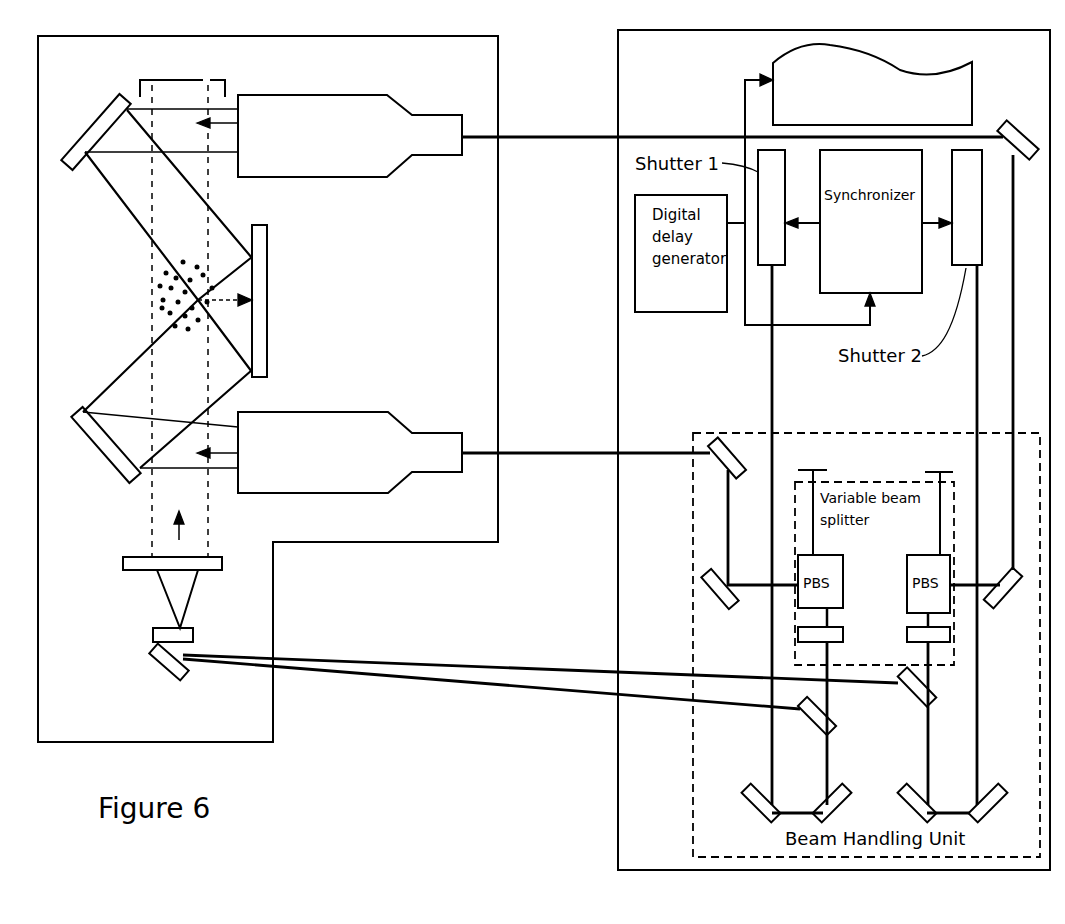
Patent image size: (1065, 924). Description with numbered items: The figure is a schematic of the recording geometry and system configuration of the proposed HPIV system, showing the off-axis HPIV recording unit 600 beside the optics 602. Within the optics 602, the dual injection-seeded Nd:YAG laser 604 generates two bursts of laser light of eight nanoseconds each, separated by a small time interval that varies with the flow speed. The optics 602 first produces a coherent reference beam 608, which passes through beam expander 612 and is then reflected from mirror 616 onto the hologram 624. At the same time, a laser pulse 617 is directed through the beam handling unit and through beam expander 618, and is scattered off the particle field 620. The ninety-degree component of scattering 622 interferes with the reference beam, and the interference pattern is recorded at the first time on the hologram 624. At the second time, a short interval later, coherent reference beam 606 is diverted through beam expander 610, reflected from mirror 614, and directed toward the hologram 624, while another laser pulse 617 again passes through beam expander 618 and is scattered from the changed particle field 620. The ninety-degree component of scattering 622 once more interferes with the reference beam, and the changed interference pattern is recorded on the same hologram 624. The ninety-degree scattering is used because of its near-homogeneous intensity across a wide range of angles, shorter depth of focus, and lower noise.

The off-axis HPIV recording unit 600 is at (268, 389).
The optics 602 is at (834, 450).
The dual injection-seeded Nd:YAG laser 604 is at (872, 84).
The coherent reference beam 606 is at (732, 141).
The coherent reference beam 608 is at (586, 458).
The beam expander 610 is at (350, 136).
The beam expander 612 is at (350, 452).
The mirror 614 is at (91, 145).
The mirror 616 is at (92, 459).
The laser pulse 617 is at (523, 669).
The beam expander 618 is at (135, 580).
The particle field 620 is at (168, 310).
The 90-degree component of scattering 622 is at (222, 290).
The hologram 624 is at (268, 346).